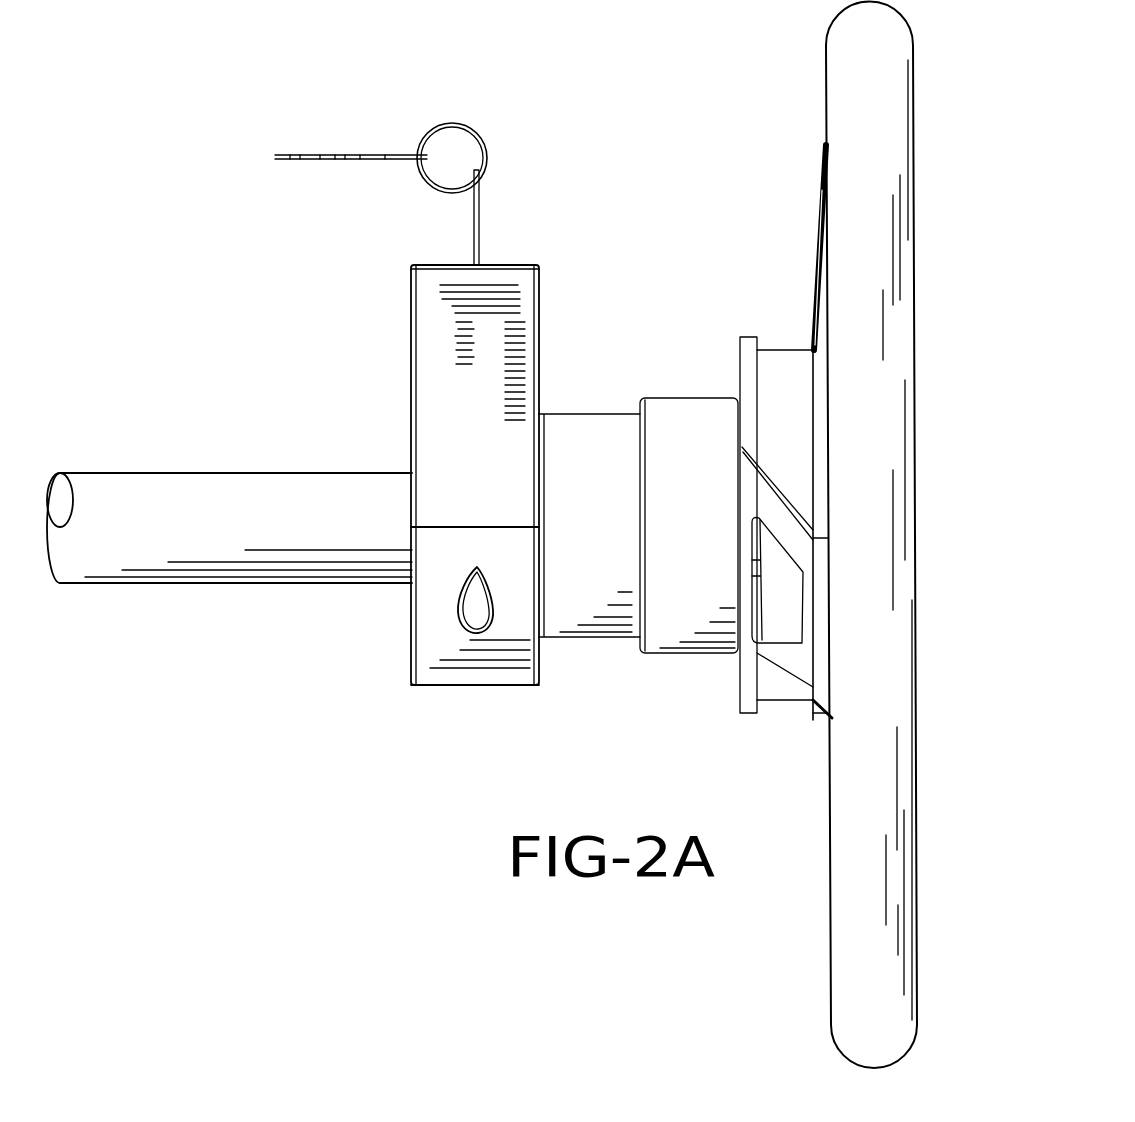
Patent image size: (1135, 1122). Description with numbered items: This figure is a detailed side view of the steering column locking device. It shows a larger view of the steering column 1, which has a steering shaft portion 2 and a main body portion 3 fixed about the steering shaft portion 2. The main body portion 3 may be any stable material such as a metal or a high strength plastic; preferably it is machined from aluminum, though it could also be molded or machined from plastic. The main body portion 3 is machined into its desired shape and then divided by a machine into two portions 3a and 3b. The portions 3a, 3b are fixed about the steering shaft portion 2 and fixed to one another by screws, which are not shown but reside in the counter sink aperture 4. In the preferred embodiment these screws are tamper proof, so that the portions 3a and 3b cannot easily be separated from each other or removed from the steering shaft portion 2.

The steering column 1 is at (180, 279).
The steering shaft portion 2 is at (237, 590).
The main body portion 3 is at (406, 341).
The portion 3a is at (431, 643).
The portion 3b is at (434, 476).
The counter sink aperture 4 is at (480, 607).